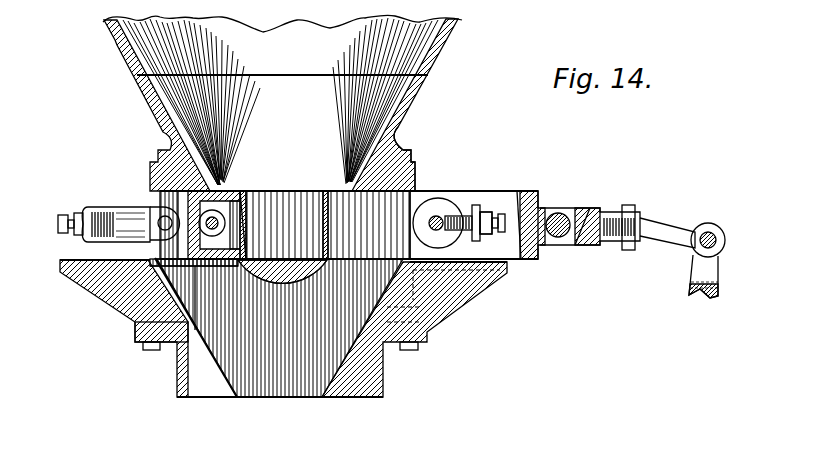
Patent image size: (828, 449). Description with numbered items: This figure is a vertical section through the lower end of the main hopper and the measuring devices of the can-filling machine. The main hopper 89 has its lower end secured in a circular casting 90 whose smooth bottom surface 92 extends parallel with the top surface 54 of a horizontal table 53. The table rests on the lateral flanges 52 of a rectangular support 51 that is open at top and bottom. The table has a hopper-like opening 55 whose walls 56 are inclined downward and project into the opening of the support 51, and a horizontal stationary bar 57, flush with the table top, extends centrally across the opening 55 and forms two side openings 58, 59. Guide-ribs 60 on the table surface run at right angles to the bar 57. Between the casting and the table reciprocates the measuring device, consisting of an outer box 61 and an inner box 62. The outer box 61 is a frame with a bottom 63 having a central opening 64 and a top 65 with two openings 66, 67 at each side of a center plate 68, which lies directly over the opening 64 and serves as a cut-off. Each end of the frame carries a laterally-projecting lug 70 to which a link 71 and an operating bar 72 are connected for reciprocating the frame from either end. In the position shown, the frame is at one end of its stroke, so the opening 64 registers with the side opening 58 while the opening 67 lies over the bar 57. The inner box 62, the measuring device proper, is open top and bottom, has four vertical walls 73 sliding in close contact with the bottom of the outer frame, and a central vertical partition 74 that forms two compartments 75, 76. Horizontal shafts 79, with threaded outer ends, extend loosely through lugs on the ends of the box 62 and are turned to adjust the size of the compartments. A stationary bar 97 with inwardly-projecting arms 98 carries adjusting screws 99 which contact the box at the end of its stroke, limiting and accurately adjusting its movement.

The main hopper 89 is at (280, 101).
The circular casting 90 is at (160, 118).
The horizontal shafts 79 is at (232, 193).
The top 65 is at (220, 190).
The center plate 68 is at (345, 190).
The compartment 75 is at (404, 152).
The central opening 64 is at (418, 186).
The inner box 62 is at (437, 222).
The opening 66 is at (492, 194).
The outer box 61 is at (540, 203).
The link 71 is at (603, 216).
The operating bar 72 is at (692, 294).
The laterally-projecting lug 70 is at (574, 244).
The bottom 63 is at (528, 259).
The adjusting screws 99 is at (60, 222).
The inwardly-projecting arms 98 is at (476, 241).
The rectangular support 51 is at (385, 378).
The hopper-like opening 55 is at (297, 375).
The walls 56 is at (214, 356).
The lateral flanges 52 is at (135, 333).
The horizontal table 53 is at (115, 270).
The top surface 54 is at (64, 260).
The guide-ribs 60 is at (152, 262).
The side opening 59 is at (166, 264).
The vertical walls 73 is at (240, 264).
The horizontal stationary bar 57 is at (277, 275).
The side opening 58 is at (366, 235).
The central vertical partition 74 is at (284, 225).
The compartment 76 is at (268, 218).
The opening 67 is at (214, 222).
The bottom surface 92 is at (150, 189).
The stationary bar 97 is at (110, 210).